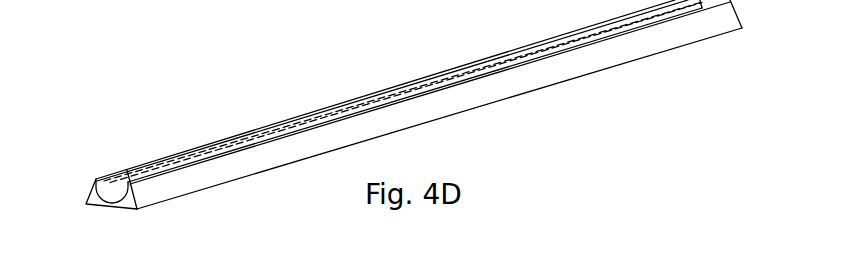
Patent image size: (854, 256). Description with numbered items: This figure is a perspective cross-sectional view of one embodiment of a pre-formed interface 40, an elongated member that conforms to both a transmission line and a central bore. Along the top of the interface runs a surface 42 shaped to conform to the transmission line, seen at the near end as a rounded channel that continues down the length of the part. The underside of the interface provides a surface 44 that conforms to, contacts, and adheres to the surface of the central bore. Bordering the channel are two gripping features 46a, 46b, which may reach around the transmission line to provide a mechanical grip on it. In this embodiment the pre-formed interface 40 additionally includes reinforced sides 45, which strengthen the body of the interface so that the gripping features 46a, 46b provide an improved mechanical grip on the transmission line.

The pre-formed interface 40 is at (228, 78).
The surface 42 is at (118, 182).
The surface 44 is at (110, 210).
The reinforced sides 45 is at (172, 183).
The gripping feature 46a is at (98, 182).
The gripping feature 46b is at (124, 186).